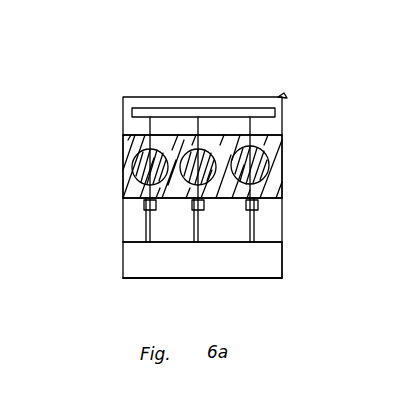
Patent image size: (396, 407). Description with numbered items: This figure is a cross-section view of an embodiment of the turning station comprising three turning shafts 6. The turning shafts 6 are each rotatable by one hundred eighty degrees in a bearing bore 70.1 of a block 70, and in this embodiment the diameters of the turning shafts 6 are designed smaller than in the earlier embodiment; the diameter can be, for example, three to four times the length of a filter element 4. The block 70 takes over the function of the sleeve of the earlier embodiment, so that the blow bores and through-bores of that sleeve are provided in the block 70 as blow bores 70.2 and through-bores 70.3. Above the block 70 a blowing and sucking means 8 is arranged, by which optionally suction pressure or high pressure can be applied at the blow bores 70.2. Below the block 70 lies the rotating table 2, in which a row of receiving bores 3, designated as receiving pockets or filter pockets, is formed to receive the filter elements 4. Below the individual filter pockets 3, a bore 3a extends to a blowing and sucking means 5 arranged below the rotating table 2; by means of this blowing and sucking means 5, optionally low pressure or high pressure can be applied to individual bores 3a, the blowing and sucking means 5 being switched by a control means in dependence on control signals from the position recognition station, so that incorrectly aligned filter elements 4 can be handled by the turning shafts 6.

The rotating table 2 is at (274, 223).
The receiving bore 3 is at (270, 196).
The bore 3a is at (257, 233).
The filter element 4 is at (150, 153).
The blowing and sucking means 5 is at (121, 263).
The turning shaft 6 is at (147, 147).
The blowing and sucking means 8 is at (286, 97).
The block 70 is at (123, 182).
The bearing bore 70.1 is at (268, 173).
The blow bore 70.2 is at (150, 150).
The through-bore 70.3 is at (122, 200).